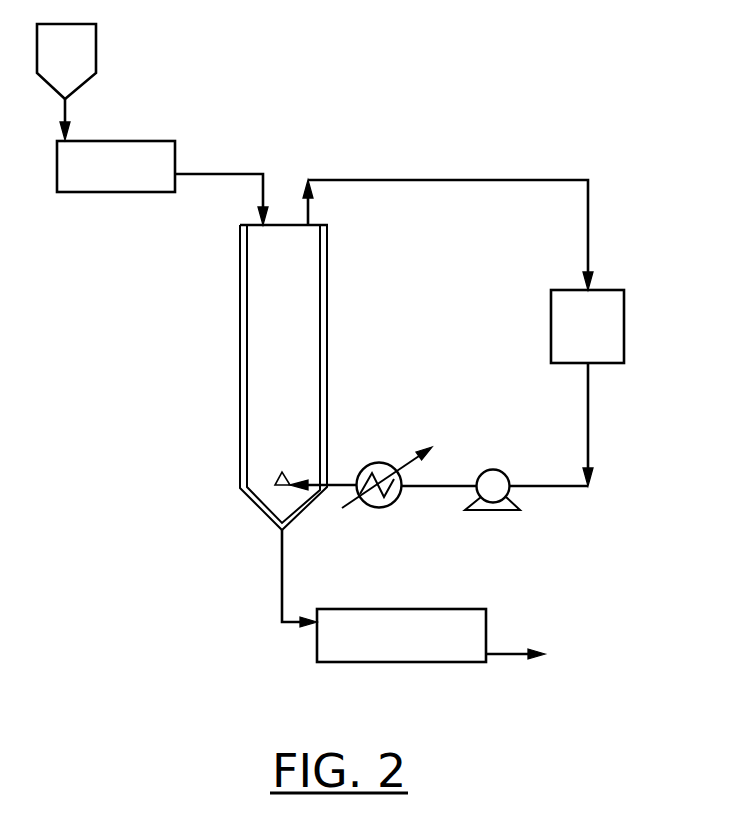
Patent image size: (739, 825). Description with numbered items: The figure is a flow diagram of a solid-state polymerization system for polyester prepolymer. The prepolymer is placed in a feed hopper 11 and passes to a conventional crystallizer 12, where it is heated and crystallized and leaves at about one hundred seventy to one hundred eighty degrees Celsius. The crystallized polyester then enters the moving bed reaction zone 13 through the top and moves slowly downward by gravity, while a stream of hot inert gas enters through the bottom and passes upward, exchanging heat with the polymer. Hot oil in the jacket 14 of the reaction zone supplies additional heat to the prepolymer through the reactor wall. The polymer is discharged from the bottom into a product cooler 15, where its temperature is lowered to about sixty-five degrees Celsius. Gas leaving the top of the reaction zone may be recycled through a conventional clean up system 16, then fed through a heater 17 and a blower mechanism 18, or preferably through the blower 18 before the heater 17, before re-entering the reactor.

The feed hopper 11 is at (88, 58).
The crystallizer 12 is at (135, 152).
The moving bed reaction zone 13 is at (258, 268).
The jacket 14 is at (323, 405).
The product cooler 15 is at (332, 642).
The clean up system 16 is at (615, 345).
The heater 17 is at (363, 507).
The blower mechanism 18 is at (490, 512).